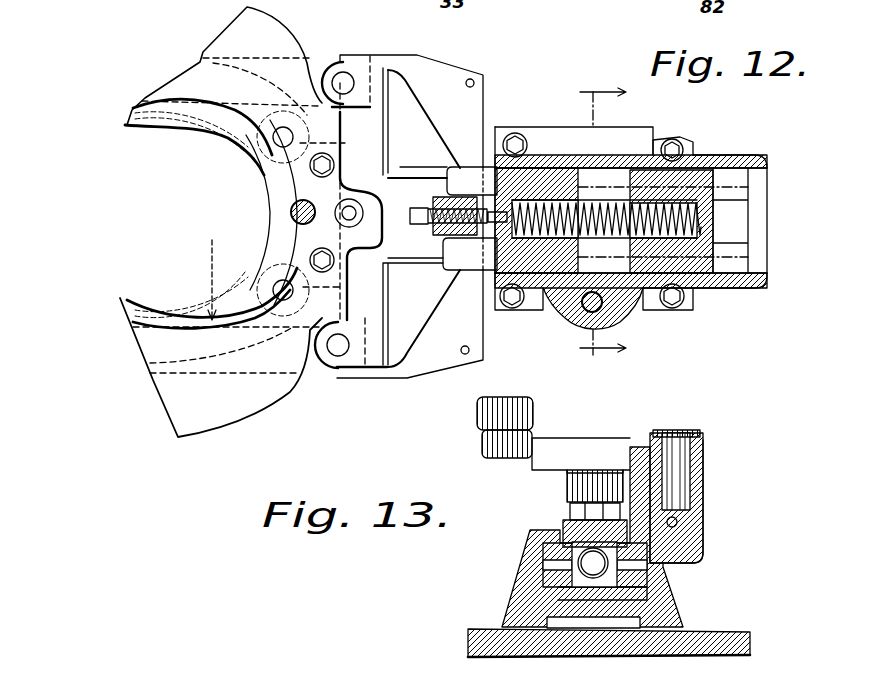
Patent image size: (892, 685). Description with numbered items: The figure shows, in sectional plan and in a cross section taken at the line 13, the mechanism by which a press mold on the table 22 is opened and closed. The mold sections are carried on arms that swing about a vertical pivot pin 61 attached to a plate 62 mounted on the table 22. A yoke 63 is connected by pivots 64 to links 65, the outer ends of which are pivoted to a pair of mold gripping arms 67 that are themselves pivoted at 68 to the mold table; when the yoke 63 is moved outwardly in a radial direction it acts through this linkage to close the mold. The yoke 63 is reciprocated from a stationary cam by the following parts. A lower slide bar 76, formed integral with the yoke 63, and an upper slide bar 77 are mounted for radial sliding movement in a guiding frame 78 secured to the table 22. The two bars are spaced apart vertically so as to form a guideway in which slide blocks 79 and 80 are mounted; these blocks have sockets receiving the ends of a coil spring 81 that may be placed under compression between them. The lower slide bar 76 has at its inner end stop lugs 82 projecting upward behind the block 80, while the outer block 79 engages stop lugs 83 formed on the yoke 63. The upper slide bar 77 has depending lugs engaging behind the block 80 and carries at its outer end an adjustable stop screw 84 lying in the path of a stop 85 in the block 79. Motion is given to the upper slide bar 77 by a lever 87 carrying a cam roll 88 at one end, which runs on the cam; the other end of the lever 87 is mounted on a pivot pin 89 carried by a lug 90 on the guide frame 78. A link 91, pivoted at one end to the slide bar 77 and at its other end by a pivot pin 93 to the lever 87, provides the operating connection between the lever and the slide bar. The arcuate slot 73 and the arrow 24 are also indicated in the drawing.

In FIG. 12, the plate 62 is at (280, 32).
In FIG. 12, the links 65 is at (318, 62).
In FIG. 12, the pivots 64 is at (341, 80).
In FIG. 12, the yoke 63 is at (425, 121).
In FIG. 12, the stop lugs 83 is at (462, 167).
In FIG. 12, the stop screw 84 is at (435, 223).
In FIG. 12, the stop 85 is at (490, 243).
In FIG. 12, the pivot 68 is at (280, 133).
In FIG. 12, the arcuate slot 73 is at (270, 180).
In FIG. 12, the vertical pivot pin 61 is at (300, 212).
In FIG. 12, the mold gripping arms 67 is at (209, 268).
In FIG. 12, the gripper unit 24 is at (525, 104).
In FIG. 13, the gripper unit 24 is at (728, 433).
In FIG. 12, the section line 13— 13 is at (591, 221).
In FIG. 12, the lower slide bar 76 is at (605, 175).
In FIG. 13, the lower slide bar 76 is at (560, 592).
In FIG. 12, the coil spring 81 is at (625, 200).
In FIG. 13, the coil spring 81 is at (560, 573).
In FIG. 12, the guiding frame 78 is at (705, 157).
In FIG. 13, the guiding frame 78 is at (535, 552).
In FIG. 12, the stop lugs 82 is at (735, 178).
In FIG. 12, the slide block 80 is at (723, 280).
In FIG. 13, the slide block 80 is at (580, 557).
In FIG. 12, the slide block 79 is at (542, 258).
In FIG. 12, the pivot pin 89 is at (540, 262).
In FIG. 13, the pivot pin 89 is at (690, 457).
In FIG. 12, the lug 90 is at (615, 316).
In FIG. 13, the lug 90 is at (703, 522).
In FIG. 13, the cam roll 88 is at (533, 410).
In FIG. 13, the lever 87 is at (605, 447).
In FIG. 13, the link 91 is at (567, 487).
In FIG. 13, the pivot pin 93 is at (573, 508).
In FIG. 13, the upper slide bar 77 is at (575, 530).
In FIG. 13, the table 22 is at (598, 645).